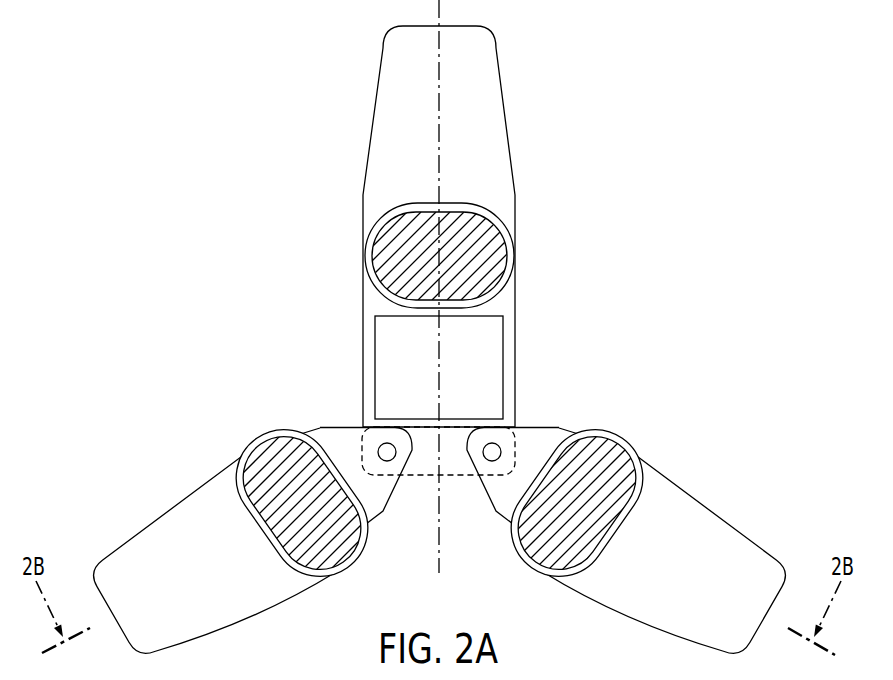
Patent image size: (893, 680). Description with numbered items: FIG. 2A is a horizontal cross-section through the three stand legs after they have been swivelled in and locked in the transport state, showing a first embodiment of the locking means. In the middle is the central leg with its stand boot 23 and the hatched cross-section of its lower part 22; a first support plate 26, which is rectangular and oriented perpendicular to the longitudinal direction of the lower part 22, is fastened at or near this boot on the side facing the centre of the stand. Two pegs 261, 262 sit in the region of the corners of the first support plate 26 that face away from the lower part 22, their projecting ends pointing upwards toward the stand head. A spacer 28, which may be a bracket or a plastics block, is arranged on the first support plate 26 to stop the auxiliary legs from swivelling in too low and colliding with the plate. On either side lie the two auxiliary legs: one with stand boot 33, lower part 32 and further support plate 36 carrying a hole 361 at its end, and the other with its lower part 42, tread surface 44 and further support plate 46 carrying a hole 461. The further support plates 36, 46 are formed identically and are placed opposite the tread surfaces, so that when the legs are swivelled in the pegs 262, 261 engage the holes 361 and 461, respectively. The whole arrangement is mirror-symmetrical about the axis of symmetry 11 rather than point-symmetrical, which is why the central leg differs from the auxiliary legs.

The axis of symmetry 11 is at (439, 18).
The lower part of the stand leg 22 is at (502, 248).
The stand boot 23 is at (528, 172).
The first support plate 26 is at (510, 353).
The spacer 28 is at (422, 374).
The peg 261 is at (387, 452).
The peg 262 is at (492, 452).
The lower part of the stand leg 32 is at (603, 458).
The stand boot 33 is at (682, 456).
The further support plate 36 is at (500, 510).
The hole 361 is at (533, 416).
The lower part of the stand leg 42 is at (287, 452).
The tread surface 44 is at (186, 471).
The further support plate 46 is at (382, 510).
The hole 461 is at (345, 416).